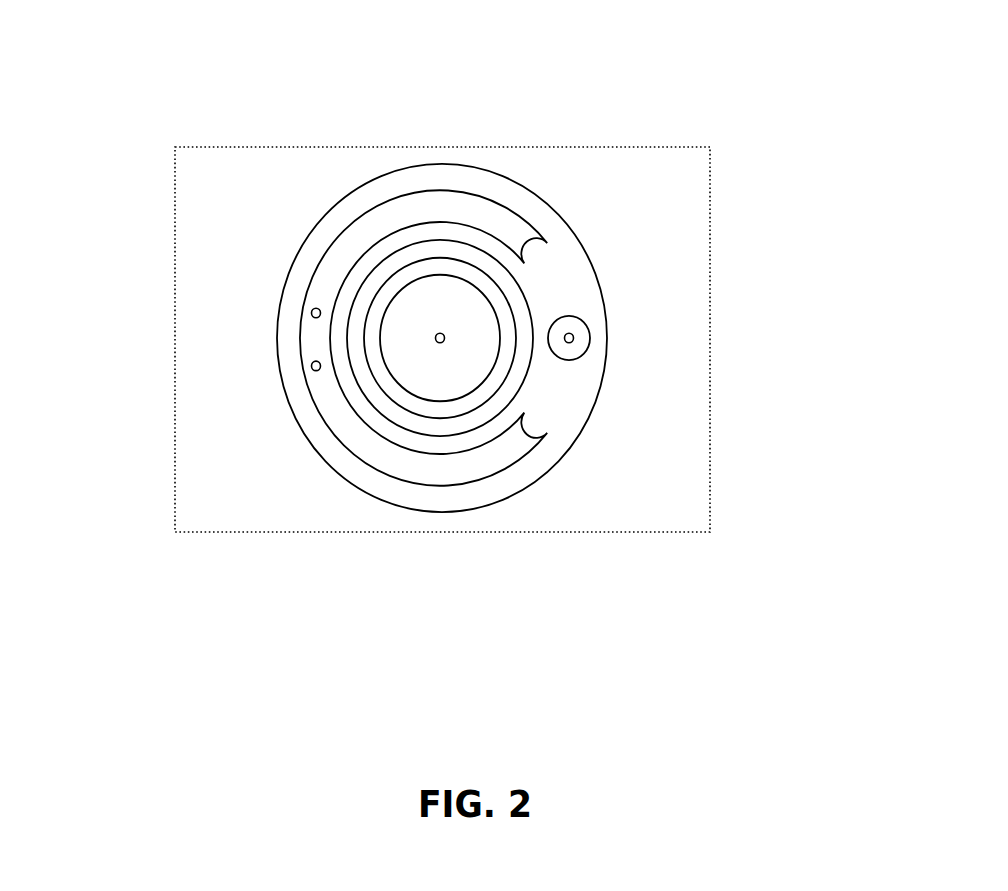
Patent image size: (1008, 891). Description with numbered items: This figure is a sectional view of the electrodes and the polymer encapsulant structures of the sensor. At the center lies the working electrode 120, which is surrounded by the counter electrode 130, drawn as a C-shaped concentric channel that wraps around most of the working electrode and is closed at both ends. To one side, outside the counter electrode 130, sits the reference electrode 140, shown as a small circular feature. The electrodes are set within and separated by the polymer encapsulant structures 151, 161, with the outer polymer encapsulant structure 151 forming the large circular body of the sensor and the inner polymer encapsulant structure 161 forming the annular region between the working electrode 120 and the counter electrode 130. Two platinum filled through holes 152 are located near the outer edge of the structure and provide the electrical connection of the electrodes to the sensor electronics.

The polymer encapsulant structure 151 is at (298, 188).
The counter electrode 130 is at (433, 197).
The polymer encapsulant structure 161 is at (490, 258).
The working electrode 120 is at (448, 368).
The reference electrode 140 is at (559, 327).
The platinum filled through holes 152 is at (313, 367).